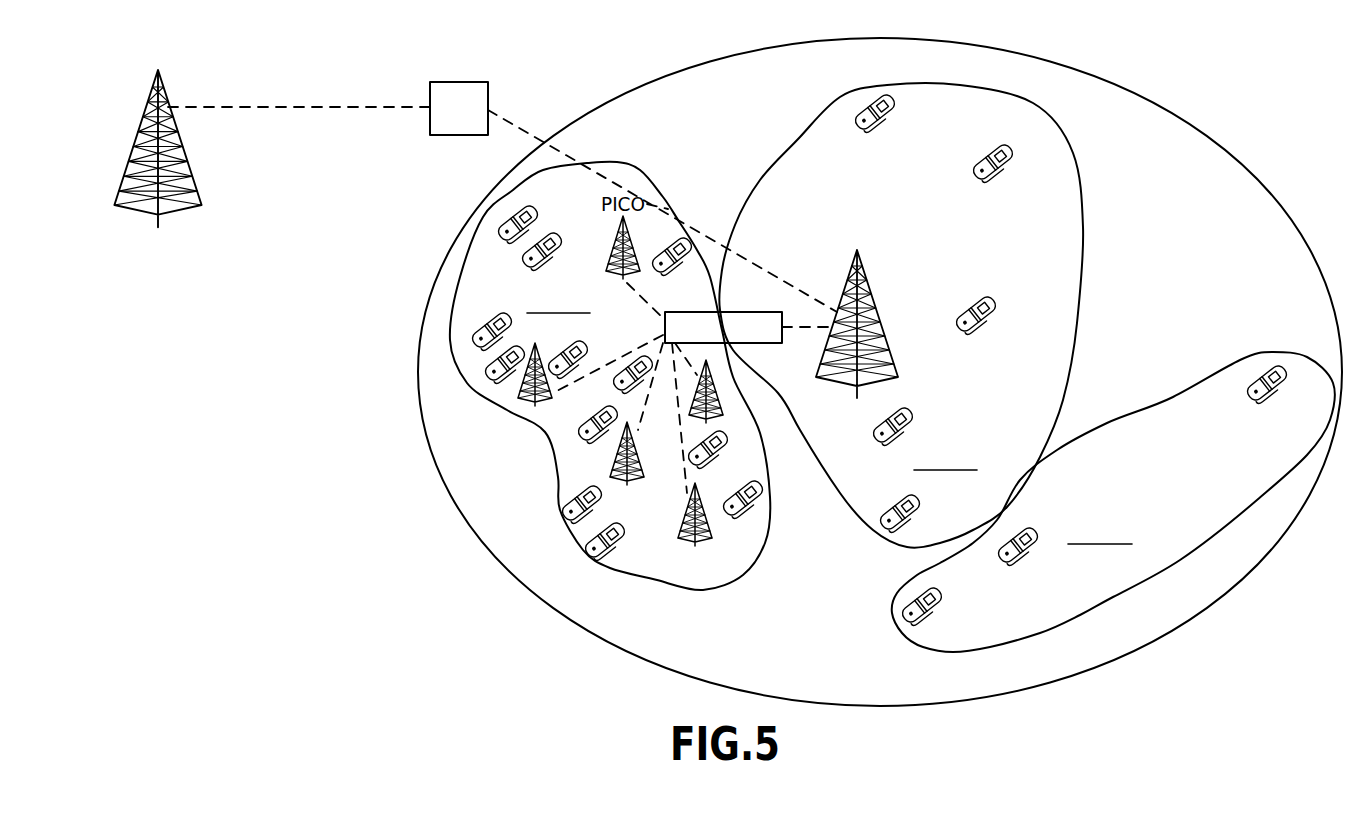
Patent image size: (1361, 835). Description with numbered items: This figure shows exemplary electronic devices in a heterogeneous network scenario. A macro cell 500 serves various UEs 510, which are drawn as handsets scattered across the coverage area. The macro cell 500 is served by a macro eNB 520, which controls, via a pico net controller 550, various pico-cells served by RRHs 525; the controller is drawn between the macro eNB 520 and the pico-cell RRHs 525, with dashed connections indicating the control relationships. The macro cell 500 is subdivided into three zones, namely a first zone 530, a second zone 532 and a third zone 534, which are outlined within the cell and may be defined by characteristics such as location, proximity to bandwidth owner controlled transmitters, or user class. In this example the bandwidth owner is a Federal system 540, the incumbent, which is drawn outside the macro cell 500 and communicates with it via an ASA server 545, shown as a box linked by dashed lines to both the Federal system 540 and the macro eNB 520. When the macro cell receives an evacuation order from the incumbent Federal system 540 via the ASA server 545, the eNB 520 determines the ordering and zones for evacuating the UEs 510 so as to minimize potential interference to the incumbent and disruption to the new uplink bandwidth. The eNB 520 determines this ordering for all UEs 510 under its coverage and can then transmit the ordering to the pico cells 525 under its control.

The macro cell 500 is at (415, 412).
The UEs 510 is at (490, 371).
The macro eNB 520 is at (868, 298).
The RRHs 525 is at (623, 490).
The zone 1 530 is at (467, 271).
The zone 2 532 is at (800, 145).
The zone 3 534 is at (922, 582).
The Federal system 540 is at (131, 168).
The ASA server 545 is at (462, 82).
The pico net controller 550 is at (731, 312).